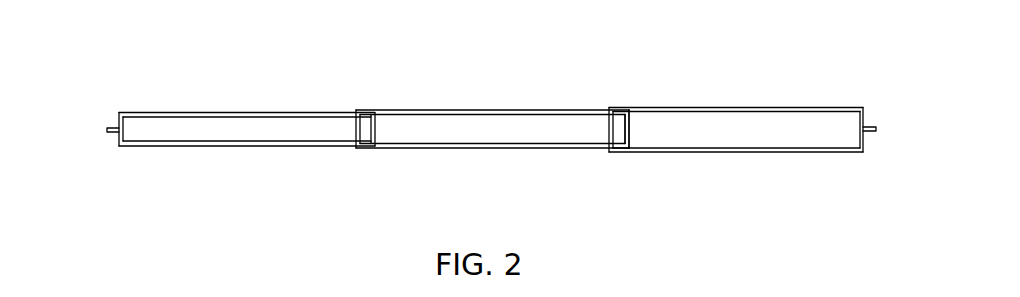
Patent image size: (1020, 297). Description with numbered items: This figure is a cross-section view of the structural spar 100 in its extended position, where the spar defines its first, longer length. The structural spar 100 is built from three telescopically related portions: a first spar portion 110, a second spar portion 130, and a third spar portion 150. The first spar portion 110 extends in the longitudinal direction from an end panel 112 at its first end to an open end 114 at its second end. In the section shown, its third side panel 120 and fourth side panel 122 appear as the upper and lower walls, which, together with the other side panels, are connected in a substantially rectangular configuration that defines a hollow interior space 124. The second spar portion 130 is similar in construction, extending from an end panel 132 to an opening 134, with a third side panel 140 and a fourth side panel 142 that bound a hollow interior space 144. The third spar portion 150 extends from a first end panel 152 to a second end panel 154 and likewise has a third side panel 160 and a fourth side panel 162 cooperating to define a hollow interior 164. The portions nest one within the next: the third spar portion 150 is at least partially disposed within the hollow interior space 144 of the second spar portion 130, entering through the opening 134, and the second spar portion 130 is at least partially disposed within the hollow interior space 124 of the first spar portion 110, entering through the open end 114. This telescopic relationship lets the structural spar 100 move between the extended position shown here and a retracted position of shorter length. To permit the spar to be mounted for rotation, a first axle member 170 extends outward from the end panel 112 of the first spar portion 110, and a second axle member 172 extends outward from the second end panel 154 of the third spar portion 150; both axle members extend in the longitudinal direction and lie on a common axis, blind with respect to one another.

The structural spar 100 is at (242, 54).
The first spar portion 110 is at (711, 108).
The end panel 112 is at (864, 108).
The open end 114 is at (609, 108).
The third side panel 120 is at (754, 108).
The fourth side panel 122 is at (767, 153).
The hollow interior space 124 is at (761, 138).
The second spar portion 130 is at (461, 112).
The end panel 132 is at (631, 130).
The opening 134 is at (357, 110).
The third side panel 140 is at (511, 110).
The fourth side panel 142 is at (502, 149).
The hollow interior space 144 is at (518, 138).
The third spar portion 150 is at (207, 112).
The first end panel 152 is at (378, 130).
The second end panel 154 is at (118, 122).
The third side panel 160 is at (238, 112).
The fourth side panel 162 is at (225, 147).
The hollow interior 164 is at (245, 138).
The first axle member 170 is at (868, 134).
The second axle member 172 is at (117, 134).